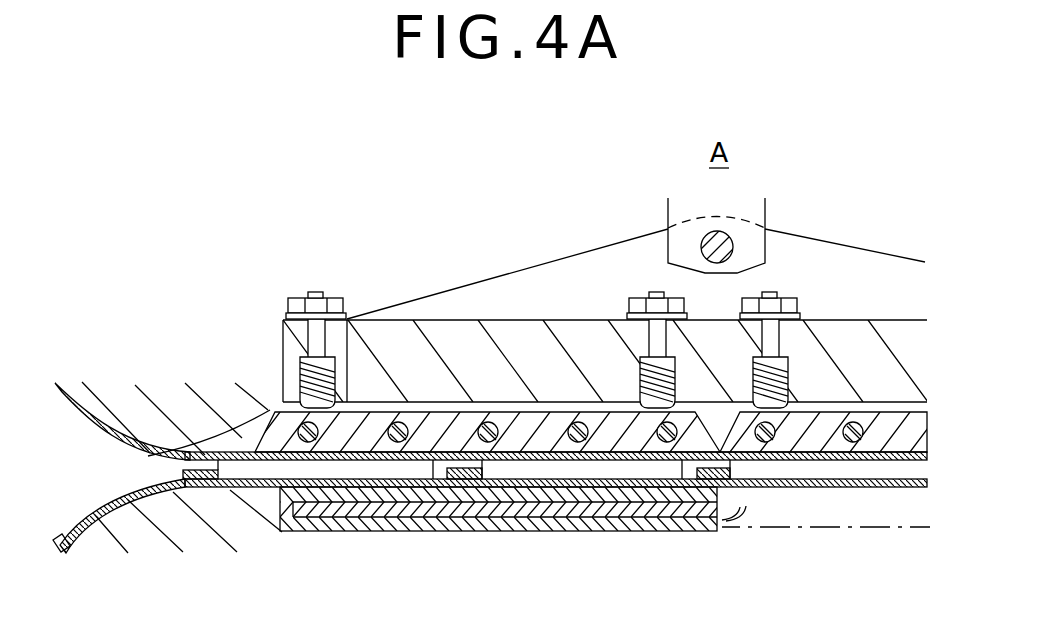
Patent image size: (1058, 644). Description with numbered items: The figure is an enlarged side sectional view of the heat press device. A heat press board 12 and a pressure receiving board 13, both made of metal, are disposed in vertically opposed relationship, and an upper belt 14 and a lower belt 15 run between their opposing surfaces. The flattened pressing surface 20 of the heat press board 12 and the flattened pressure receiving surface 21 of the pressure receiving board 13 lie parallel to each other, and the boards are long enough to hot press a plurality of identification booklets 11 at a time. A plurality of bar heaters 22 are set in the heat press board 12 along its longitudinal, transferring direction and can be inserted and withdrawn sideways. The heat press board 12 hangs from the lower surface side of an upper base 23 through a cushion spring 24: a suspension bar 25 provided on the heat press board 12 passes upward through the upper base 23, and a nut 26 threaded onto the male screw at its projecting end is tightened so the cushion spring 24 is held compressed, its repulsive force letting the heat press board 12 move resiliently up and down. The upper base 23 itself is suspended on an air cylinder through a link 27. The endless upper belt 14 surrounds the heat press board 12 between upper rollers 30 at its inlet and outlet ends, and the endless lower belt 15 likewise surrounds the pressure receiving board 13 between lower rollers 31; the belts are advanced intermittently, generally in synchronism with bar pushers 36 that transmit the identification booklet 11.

The identification booklet 11 is at (345, 497).
The heat press board 12 is at (445, 425).
The pressure receiving board 13 is at (623, 529).
The upper belt 14 is at (242, 437).
The lower belt 15 is at (240, 495).
The pressing surface 20 is at (358, 408).
The pressure receiving surface 21 is at (398, 493).
The bar heater 22 is at (500, 420).
The upper base 23 is at (570, 345).
The cushion spring 24 is at (283, 378).
The suspension bar 25 is at (305, 350).
The nut 26 is at (329, 293).
The link 27 is at (742, 245).
The upper roller 30 is at (148, 422).
The lower roller 31 is at (148, 533).
The bar pusher 36 is at (198, 481).